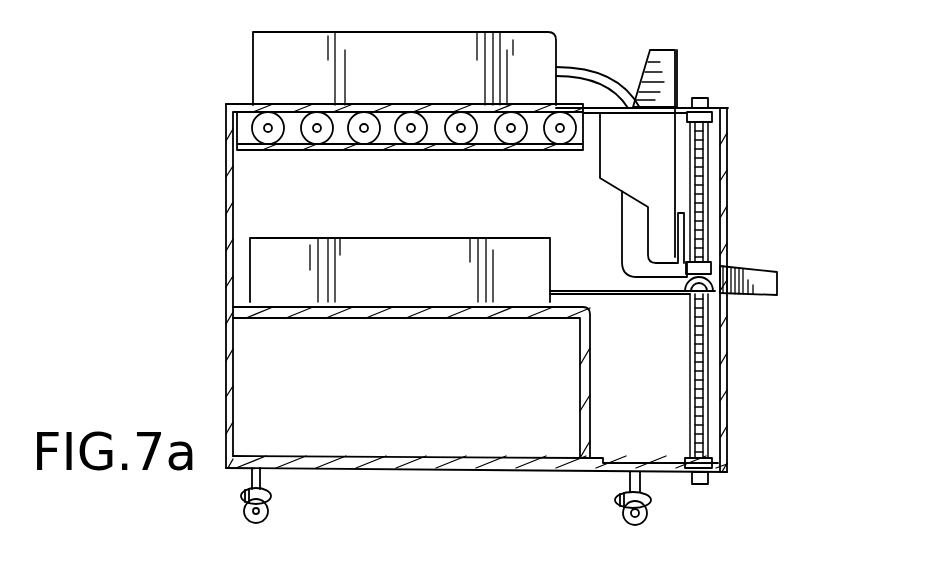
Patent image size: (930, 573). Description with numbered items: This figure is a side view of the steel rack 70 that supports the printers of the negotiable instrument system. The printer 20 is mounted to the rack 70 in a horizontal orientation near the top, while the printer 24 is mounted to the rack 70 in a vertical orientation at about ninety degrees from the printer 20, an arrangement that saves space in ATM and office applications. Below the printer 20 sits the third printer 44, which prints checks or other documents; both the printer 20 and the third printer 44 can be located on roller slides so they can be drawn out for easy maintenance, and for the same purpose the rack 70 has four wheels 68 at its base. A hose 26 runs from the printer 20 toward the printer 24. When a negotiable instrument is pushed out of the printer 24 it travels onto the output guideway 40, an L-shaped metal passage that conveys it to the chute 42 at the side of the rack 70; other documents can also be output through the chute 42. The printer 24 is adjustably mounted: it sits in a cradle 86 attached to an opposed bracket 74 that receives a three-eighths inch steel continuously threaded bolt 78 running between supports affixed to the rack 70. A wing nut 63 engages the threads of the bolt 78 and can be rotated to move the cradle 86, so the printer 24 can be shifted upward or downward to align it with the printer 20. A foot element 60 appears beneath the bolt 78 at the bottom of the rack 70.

The printer 20 is at (257, 75).
The hose / cable conduit 26 is at (586, 63).
The printer 24 is at (672, 62).
The rack 70 is at (226, 205).
The output guideway 40 is at (620, 224).
The cradle 86 is at (690, 205).
The bracket 74 is at (705, 260).
The chute 42 is at (778, 266).
The wing nut 63 is at (702, 292).
The threaded bolt 78 is at (712, 383).
The foot bolt 60 is at (672, 474).
The third printer 44 is at (258, 292).
The wheels 68 is at (266, 513).